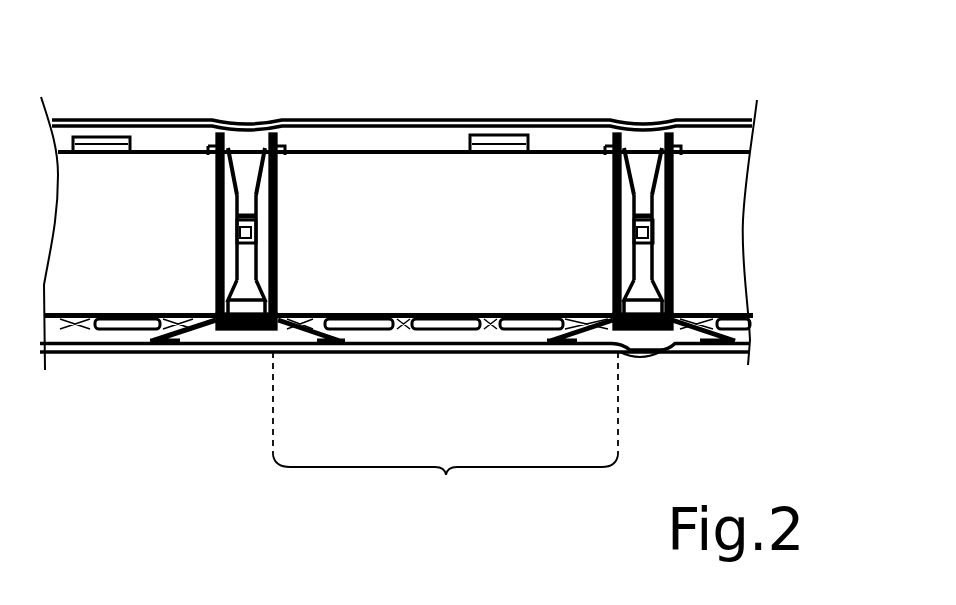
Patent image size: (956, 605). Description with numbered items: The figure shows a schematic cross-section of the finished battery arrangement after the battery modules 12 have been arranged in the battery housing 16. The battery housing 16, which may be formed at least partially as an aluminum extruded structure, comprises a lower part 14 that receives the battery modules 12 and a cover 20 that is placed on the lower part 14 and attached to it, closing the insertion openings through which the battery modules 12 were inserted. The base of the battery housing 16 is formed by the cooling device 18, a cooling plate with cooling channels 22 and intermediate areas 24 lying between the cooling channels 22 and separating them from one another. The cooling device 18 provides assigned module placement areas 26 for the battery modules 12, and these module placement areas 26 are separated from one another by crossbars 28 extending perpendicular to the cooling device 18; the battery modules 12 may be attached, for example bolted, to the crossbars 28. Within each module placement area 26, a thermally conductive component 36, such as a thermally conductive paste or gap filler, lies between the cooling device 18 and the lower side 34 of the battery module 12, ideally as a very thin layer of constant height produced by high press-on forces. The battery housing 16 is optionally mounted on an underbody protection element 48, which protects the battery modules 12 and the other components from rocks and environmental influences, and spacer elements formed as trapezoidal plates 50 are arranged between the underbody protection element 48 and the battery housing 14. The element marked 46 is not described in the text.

The battery module 12 is at (151, 170).
The lower part of the battery housing 14 is at (644, 176).
The battery housing 16 is at (586, 116).
The cooling device 18 is at (758, 326).
The cover 20 is at (468, 120).
The cooling channels 22 is at (53, 330).
The intermediate areas 24 is at (310, 315).
The module placement area 26 is at (445, 429).
The crossbars 28 is at (242, 250).
The lower side of the battery module 34 is at (135, 315).
The thermally conductive component 36 is at (180, 315).
The pillar walls 46 is at (216, 212).
The underbody protection element 48 is at (640, 355).
The trapezoidal plates 50 is at (198, 353).